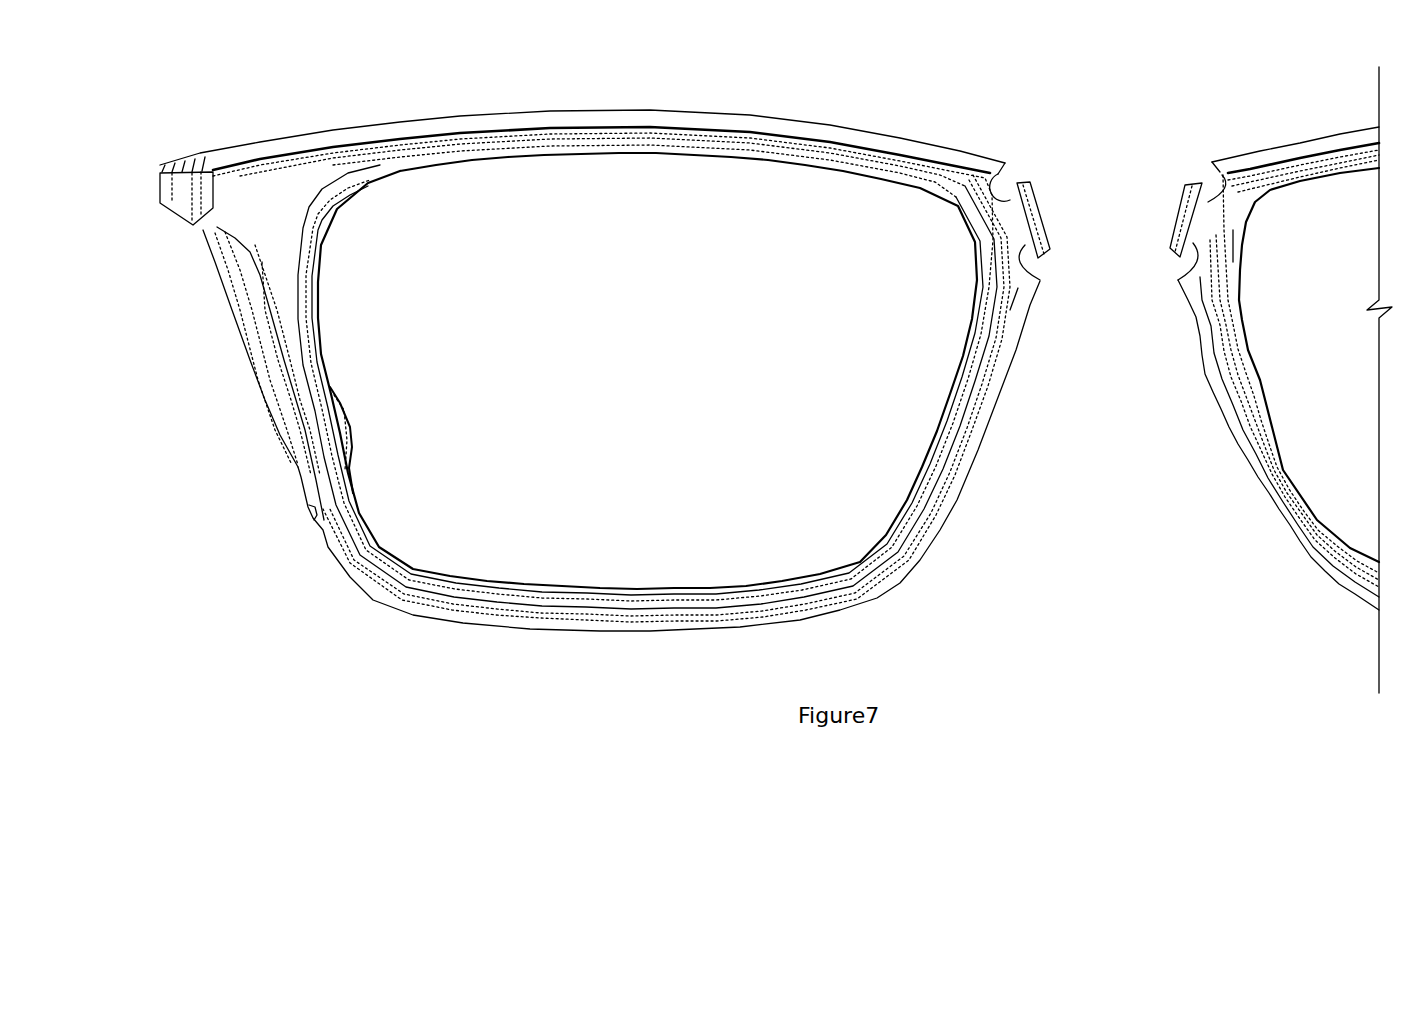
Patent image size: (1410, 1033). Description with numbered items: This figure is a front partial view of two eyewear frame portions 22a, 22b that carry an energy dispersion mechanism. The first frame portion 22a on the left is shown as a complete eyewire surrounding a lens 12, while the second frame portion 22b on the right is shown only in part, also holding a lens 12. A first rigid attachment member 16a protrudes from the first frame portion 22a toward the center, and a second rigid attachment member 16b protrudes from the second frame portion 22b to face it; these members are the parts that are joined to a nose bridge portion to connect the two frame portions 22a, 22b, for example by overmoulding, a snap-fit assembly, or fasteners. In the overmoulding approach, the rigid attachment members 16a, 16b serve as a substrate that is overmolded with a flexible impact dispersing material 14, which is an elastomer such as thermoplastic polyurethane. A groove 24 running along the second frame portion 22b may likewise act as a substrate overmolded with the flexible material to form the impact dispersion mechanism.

The lens 12 is at (585, 548).
The impact dispersing material 14 is at (930, 520).
The first rigid attachment member 16a is at (1040, 210).
The second rigid attachment member 16b is at (1180, 210).
The first frame portion 22a is at (327, 543).
The second frame portion 22b is at (1260, 470).
The groove 24 is at (1238, 325).